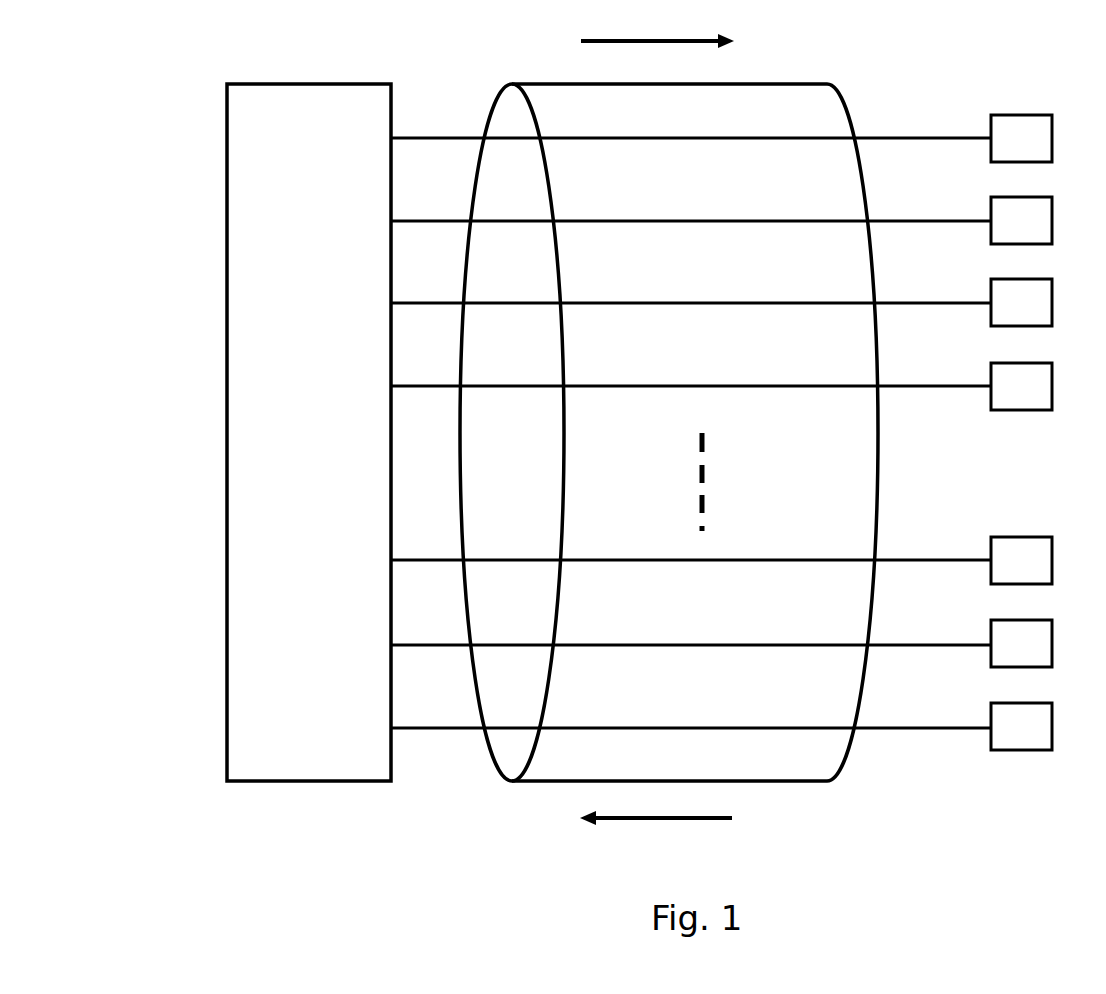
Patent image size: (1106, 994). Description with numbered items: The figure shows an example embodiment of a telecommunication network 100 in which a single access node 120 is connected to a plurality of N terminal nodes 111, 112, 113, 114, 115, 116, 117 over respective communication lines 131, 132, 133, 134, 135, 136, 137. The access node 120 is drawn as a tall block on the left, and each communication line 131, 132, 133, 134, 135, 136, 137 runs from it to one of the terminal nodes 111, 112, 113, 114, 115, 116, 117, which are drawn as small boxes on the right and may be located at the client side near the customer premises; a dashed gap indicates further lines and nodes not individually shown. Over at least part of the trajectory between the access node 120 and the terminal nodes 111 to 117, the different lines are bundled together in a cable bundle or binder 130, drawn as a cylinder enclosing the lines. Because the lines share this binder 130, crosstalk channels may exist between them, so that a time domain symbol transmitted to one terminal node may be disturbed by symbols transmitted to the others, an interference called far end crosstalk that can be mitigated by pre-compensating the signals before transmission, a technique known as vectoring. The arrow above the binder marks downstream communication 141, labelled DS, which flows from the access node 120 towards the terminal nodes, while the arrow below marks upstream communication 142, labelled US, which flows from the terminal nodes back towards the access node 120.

The telecommunication network 100 is at (188, 66).
The access node 120 is at (309, 432).
The cable bundle or binder 130 is at (844, 98).
The communication line 131 is at (903, 141).
The communication line 132 is at (903, 224).
The communication line 133 is at (903, 306).
The communication line 134 is at (903, 389).
The communication line 135 is at (903, 563).
The communication line 136 is at (903, 648).
The communication line 137 is at (903, 731).
The terminal node 111 is at (1021, 138).
The terminal node 112 is at (1021, 220).
The terminal node 113 is at (1021, 302).
The terminal node 114 is at (1021, 386).
The terminal node 115 is at (1021, 560).
The terminal node 116 is at (1021, 643).
The terminal node 117 is at (1021, 726).
The downstream communication 141 is at (657, 44).
The upstream communication 142 is at (697, 821).